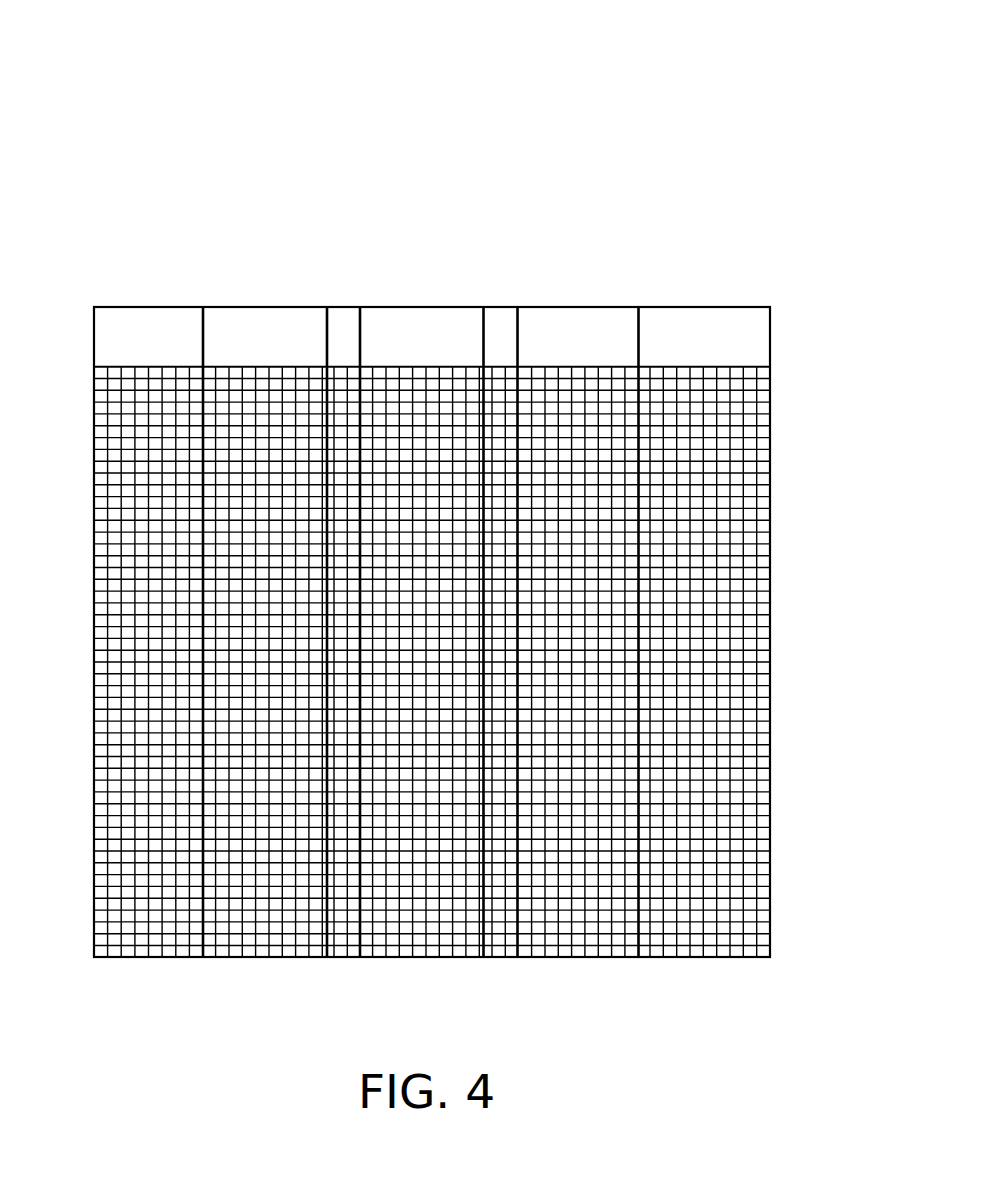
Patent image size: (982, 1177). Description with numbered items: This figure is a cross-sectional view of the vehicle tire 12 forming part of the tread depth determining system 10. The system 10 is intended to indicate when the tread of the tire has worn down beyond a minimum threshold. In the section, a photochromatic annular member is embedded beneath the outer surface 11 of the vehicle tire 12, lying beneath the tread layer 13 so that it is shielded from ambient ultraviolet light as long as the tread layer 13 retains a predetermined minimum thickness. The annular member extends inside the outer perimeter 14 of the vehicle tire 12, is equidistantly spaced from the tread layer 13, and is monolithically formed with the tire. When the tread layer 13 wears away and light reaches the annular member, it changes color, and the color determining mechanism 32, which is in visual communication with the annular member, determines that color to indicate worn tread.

The vehicle tire tread depth determining system 10 is at (385, 95).
The outer surface 11 is at (655, 305).
The vehicle tire 12 is at (579, 320).
The tread layer 13 is at (772, 332).
The outer perimeter 14 is at (770, 439).
The color determining mechanism 32 is at (748, 627).